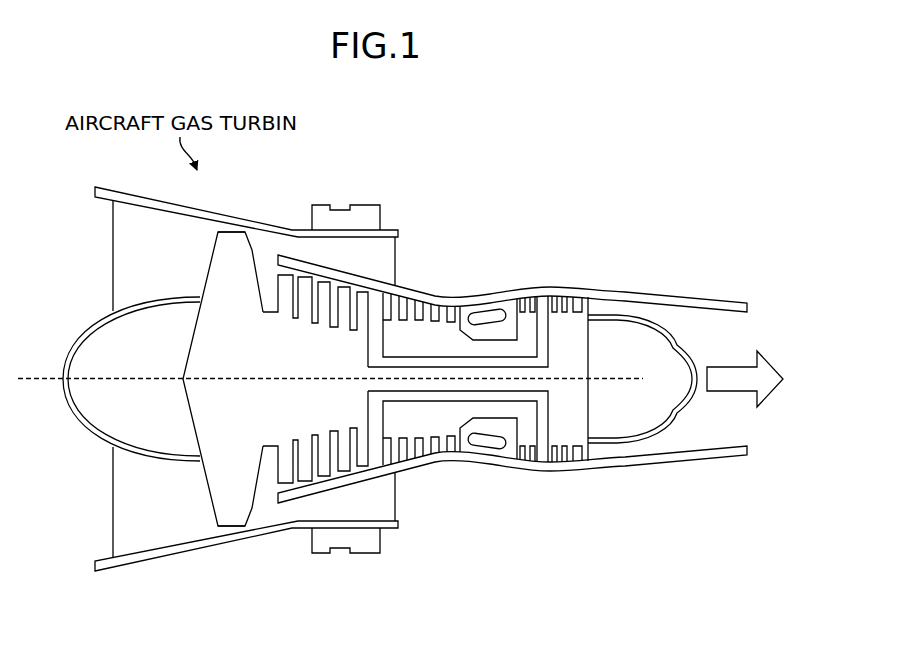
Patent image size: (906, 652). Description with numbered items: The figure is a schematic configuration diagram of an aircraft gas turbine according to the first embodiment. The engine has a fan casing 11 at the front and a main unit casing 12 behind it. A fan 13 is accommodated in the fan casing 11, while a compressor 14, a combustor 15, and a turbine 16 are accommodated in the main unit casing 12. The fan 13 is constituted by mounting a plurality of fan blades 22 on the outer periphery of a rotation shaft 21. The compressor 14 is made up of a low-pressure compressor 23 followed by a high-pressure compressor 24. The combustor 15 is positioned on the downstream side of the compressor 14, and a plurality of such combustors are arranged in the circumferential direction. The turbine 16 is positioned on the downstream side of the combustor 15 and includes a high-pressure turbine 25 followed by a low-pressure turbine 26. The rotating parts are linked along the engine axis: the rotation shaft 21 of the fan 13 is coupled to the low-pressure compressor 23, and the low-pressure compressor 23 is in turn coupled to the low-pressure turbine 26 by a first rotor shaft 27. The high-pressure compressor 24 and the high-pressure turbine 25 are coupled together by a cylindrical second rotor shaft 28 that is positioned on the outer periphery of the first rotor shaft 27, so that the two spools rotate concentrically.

The fan casing 11 is at (140, 565).
The main unit casing 12 is at (697, 297).
The fan 13 is at (202, 281).
The compressor 14 is at (378, 260).
The combustor 15 is at (473, 288).
The turbine 16 is at (552, 379).
The rotation shaft 21 is at (207, 402).
The fan blade 22 is at (228, 243).
The low-pressure compressor 23 is at (308, 420).
The high-pressure compressor 24 is at (432, 413).
The high-pressure turbine 25 is at (520, 430).
The low-pressure turbine 26 is at (568, 425).
The first rotor shaft 27 is at (460, 383).
The second rotor shaft 28 is at (490, 410).